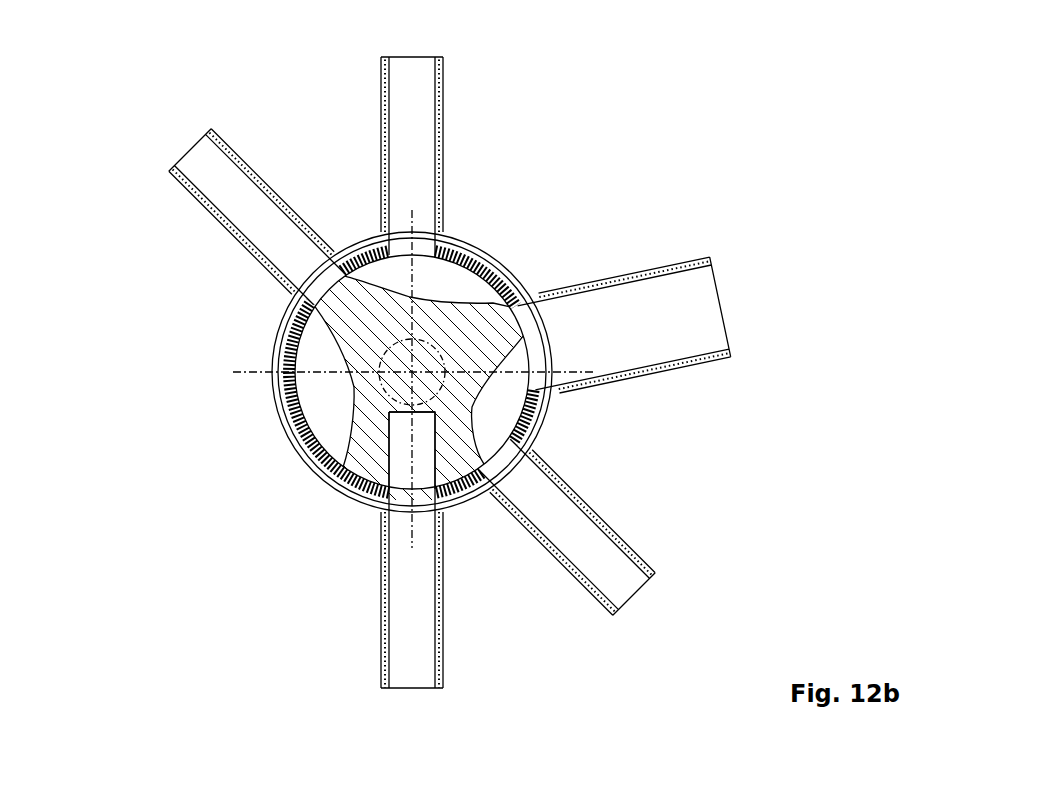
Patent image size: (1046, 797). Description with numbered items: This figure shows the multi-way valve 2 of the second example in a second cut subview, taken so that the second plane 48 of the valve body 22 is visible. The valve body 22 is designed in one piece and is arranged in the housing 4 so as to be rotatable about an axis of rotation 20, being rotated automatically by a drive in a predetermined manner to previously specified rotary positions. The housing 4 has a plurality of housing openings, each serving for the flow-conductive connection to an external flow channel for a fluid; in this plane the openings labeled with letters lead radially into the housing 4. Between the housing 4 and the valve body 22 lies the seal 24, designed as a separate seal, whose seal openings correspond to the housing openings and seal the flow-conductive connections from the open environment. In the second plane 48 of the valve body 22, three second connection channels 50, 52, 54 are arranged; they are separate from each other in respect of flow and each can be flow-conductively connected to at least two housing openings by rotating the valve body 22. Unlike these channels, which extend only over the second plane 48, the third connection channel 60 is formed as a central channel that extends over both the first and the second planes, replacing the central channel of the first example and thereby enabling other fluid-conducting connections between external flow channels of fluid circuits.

The multi-way valve 2 is at (736, 138).
The housing 4 is at (500, 260).
The second connection channel 52 is at (466, 287).
The second connection channel 54 is at (316, 353).
The third connection channel 60 is at (405, 458).
The second plane 48 is at (154, 447).
The seal 24 is at (337, 488).
The valve body 22 is at (492, 354).
The second connection channel 50 is at (504, 385).
The axis of rotation 20 is at (415, 372).